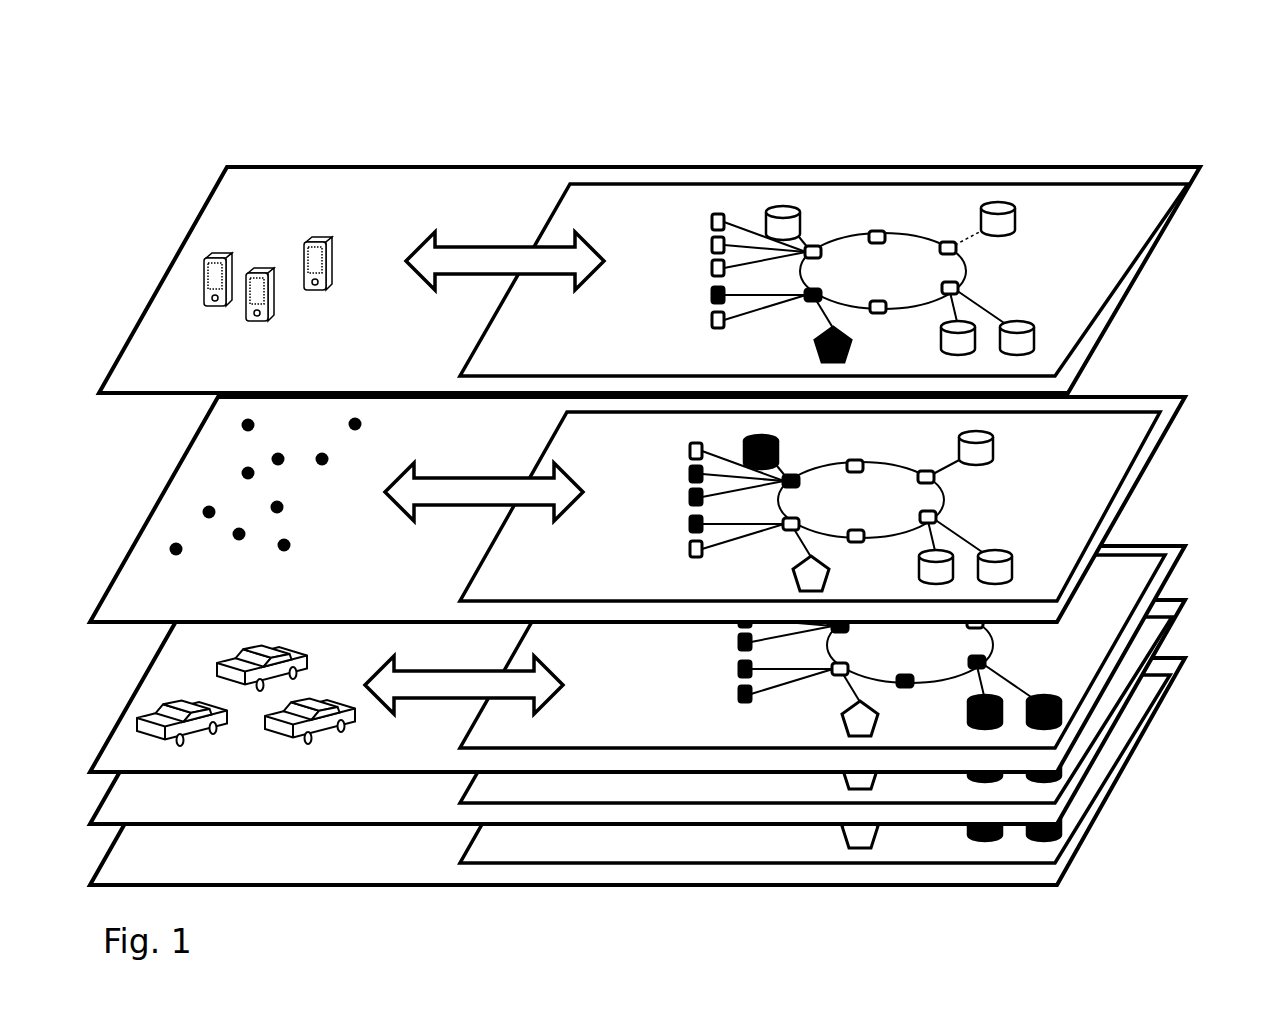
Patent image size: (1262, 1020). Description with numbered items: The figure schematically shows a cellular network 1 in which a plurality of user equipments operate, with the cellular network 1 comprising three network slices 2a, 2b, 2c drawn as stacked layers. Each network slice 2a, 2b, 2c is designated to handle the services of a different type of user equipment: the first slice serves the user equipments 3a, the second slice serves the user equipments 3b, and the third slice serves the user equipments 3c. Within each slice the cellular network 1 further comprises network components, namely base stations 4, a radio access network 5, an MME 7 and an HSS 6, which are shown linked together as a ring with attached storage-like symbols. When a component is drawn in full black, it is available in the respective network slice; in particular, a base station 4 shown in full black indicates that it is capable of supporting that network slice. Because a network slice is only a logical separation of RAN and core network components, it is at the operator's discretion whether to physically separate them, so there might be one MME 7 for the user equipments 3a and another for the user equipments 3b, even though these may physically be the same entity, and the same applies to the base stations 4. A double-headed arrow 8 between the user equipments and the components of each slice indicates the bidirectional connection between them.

The cellular network 1 is at (1072, 134).
The network slice 2a is at (1118, 215).
The network slice 2b is at (1100, 465).
The network slice 2c is at (1102, 621).
The user equipments 3a is at (237, 254).
The user equipments 3b is at (214, 496).
The user equipments 3c is at (199, 756).
The base stations 4 is at (727, 209).
The radio access network 5 is at (792, 204).
The HSS 6 is at (845, 320).
The MME 7 is at (832, 280).
The bidirectional communication link 8 is at (519, 244).